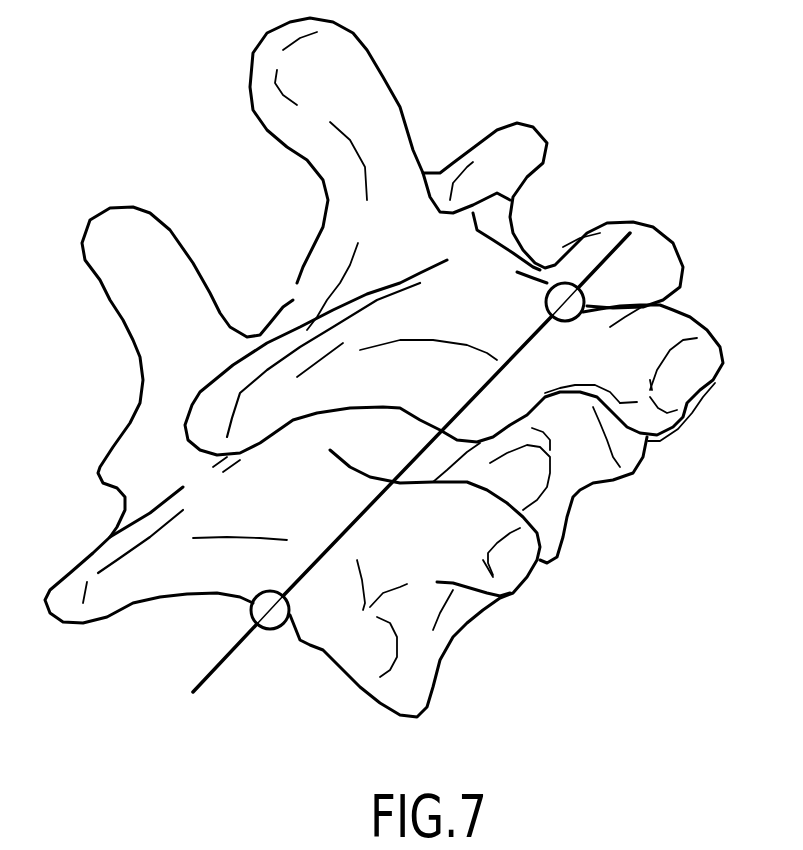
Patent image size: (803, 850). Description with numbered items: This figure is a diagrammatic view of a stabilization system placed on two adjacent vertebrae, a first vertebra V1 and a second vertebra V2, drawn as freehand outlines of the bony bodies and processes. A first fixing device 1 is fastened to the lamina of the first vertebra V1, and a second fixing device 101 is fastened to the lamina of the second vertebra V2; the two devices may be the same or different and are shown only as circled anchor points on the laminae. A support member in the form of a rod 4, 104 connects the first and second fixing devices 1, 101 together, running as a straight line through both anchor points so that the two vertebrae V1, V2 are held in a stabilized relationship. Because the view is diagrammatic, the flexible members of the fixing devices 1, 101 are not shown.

The fixing device 1 is at (439, 440).
The fixing device 101 is at (563, 300).
The rod 4 is at (411, 462).
The rod 104 is at (350, 527).
The first vertebra V1 is at (169, 413).
The second vertebra V2 is at (382, 271).